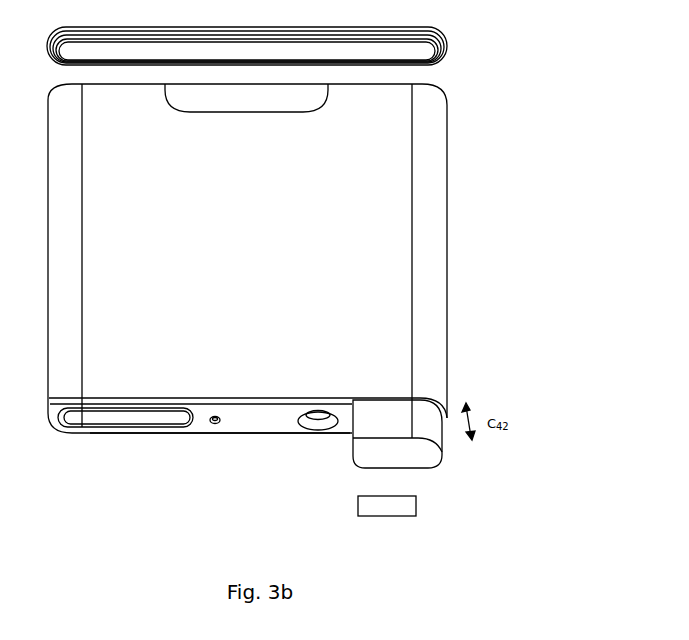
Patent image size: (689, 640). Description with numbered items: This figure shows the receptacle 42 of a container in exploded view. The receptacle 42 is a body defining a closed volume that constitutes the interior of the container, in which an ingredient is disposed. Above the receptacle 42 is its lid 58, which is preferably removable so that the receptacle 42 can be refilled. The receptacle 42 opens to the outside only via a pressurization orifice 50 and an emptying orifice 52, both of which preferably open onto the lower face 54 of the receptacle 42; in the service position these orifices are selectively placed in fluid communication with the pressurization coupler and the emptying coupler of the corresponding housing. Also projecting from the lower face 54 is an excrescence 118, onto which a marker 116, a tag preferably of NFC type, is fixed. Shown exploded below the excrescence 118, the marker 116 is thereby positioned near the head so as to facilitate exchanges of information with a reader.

The receptacle 42 is at (482, 182).
The lid 58 is at (422, 53).
The emptying orifice 52 is at (135, 412).
The pressurization orifice 50 is at (318, 428).
The lower face 54 is at (272, 415).
The excrescence 118 is at (417, 455).
The marker 116 is at (392, 508).